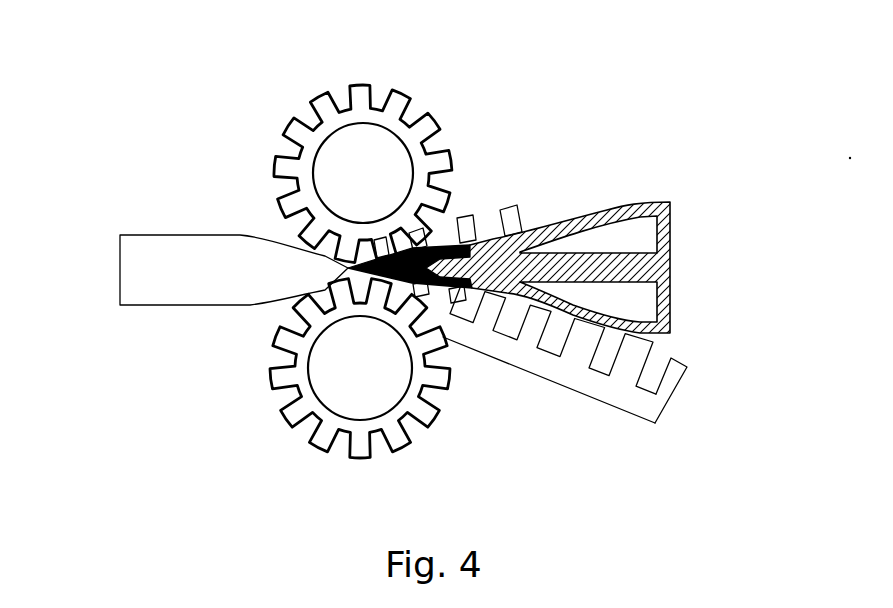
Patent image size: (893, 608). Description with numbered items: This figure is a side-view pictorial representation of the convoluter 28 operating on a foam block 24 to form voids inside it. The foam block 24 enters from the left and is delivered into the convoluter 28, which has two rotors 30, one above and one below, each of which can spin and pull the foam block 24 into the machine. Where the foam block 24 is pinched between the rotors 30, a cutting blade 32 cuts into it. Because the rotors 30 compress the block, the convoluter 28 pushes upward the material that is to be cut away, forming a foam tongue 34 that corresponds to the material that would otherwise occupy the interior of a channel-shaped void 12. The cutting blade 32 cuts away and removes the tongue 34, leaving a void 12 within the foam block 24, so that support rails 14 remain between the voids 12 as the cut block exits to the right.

The void 12 is at (648, 378).
The support rail 14 is at (623, 367).
The foam block 24 is at (140, 238).
The convoluter 28 is at (433, 83).
The rotor 30 is at (305, 105).
The cutting blade 32 is at (668, 203).
The foam tongue 34 is at (508, 207).